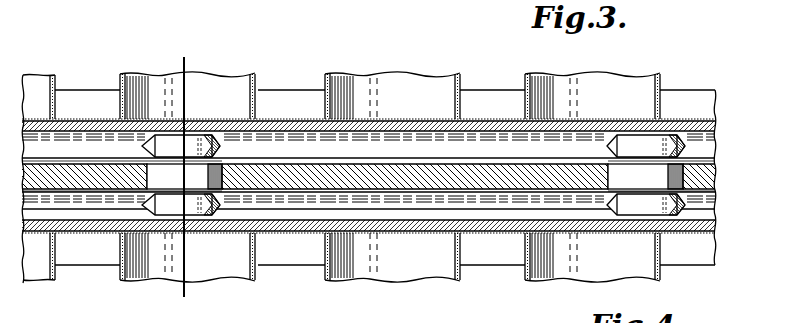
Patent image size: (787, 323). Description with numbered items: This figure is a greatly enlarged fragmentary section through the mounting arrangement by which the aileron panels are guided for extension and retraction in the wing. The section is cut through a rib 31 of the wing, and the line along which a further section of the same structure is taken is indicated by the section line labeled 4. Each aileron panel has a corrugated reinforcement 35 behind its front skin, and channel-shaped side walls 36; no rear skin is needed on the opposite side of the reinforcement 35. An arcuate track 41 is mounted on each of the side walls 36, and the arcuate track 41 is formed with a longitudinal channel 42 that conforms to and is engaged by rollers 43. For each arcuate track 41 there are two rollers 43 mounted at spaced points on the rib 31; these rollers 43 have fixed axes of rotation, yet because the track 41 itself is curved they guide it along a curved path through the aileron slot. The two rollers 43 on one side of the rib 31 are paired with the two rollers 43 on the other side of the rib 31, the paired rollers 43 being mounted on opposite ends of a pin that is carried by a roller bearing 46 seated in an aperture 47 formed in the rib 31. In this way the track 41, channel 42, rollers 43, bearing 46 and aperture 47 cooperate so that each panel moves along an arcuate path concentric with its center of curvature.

The rib 31 is at (92, 173).
The corrugated reinforcement 35 is at (249, 72).
The channel-shaped side walls 36 is at (308, 98).
The arcuate track 41 is at (395, 130).
The longitudinal channel 42 is at (90, 140).
The rollers 43 is at (167, 142).
The roller bearing 46 is at (215, 132).
The aperture 47 is at (622, 135).
The section line 4- 4 is at (198, 295).